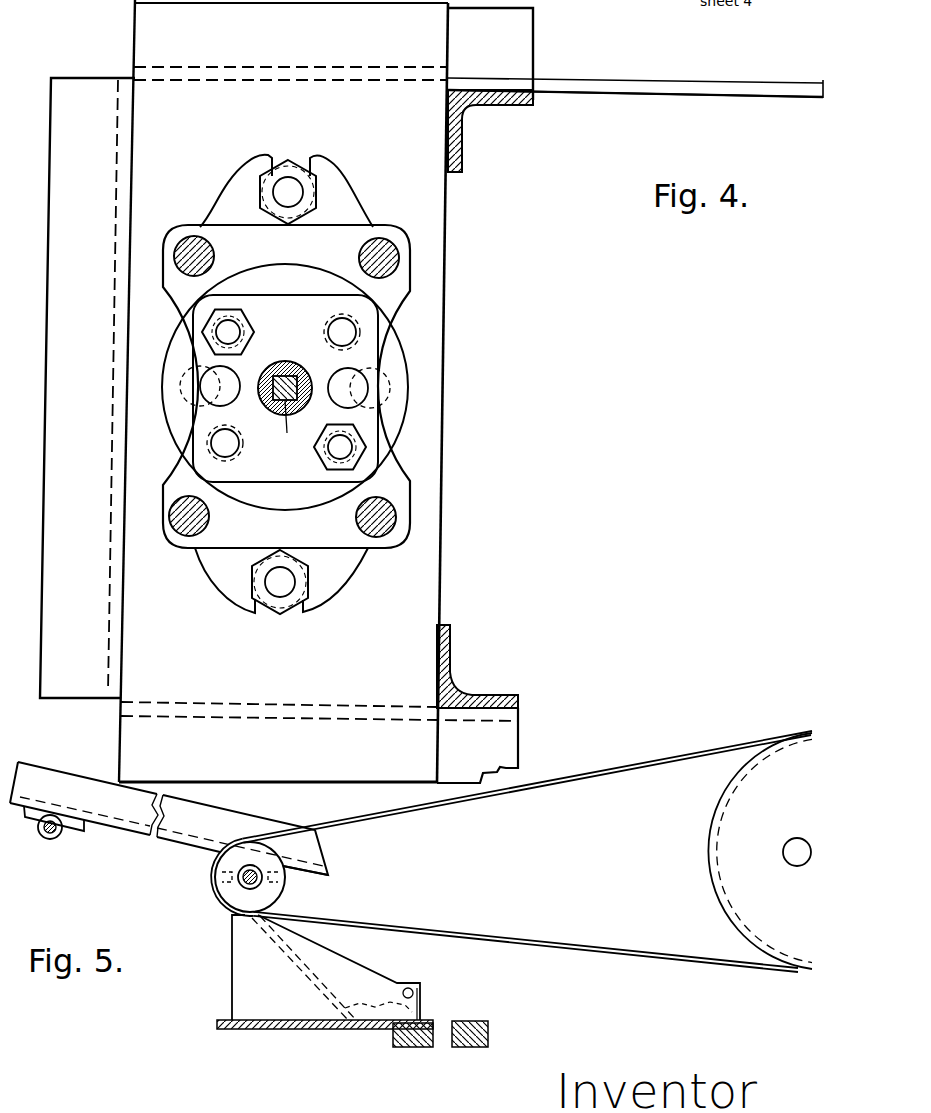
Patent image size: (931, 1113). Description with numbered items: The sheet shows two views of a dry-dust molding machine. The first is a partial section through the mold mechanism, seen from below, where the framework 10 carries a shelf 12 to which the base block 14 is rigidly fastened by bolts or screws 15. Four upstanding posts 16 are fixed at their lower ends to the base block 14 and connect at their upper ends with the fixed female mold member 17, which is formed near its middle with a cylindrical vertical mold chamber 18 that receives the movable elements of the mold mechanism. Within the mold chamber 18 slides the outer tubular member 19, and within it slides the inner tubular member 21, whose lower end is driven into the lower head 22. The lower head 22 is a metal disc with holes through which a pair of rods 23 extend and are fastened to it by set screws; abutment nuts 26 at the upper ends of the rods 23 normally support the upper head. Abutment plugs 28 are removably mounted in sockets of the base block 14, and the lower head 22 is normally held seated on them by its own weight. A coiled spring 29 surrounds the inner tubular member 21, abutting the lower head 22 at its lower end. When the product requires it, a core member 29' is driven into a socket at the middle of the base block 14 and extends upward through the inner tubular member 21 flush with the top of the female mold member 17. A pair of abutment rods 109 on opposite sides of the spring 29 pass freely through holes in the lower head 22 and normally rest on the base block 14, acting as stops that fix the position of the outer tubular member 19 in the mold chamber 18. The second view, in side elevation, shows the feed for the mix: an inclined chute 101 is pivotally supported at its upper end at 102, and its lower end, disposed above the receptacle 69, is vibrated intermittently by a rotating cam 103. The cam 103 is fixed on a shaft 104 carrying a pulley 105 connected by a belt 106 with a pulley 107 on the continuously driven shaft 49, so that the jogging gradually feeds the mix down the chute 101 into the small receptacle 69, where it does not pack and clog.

In FIG. 4, the framework 10 is at (520, 104).
In FIG. 4, the shelf 12 is at (279, 391).
In FIG. 4, the base block 14 is at (345, 236).
In FIG. 4, the bolts or screws 15 is at (299, 190).
In FIG. 4, the upstanding posts 16 is at (194, 240).
In FIG. 4, the outer tubular member 19 is at (285, 362).
In FIG. 4, the inner tubular member 21 is at (268, 408).
In FIG. 4, the lower head 22 is at (403, 348).
In FIG. 4, the rods 23 is at (233, 333).
In FIG. 4, the abutment nuts 26 is at (242, 316).
In FIG. 4, the abutment plug 28 is at (390, 392).
In FIG. 4, the coiled spring 29 is at (339, 327).
In FIG. 4, the core member 29' is at (288, 433).
In FIG. 4, the abutment rods 109 is at (360, 320).
In FIG. 5, the inclined chute 101 is at (220, 820).
In FIG. 5, the pivot support 102 is at (47, 837).
In FIG. 5, the rotating cam 103 is at (273, 887).
In FIG. 5, the shaft 104 is at (245, 881).
In FIG. 5, the pulley 105 is at (228, 886).
In FIG. 5, the belt 106 is at (612, 760).
In FIG. 5, the pulley 107 is at (760, 851).
In FIG. 5, the continuously driven shaft 49 is at (795, 851).
In FIG. 5, the receptacle 69 is at (326, 967).
In FIG. 5, the mold chamber 18 is at (443, 1020).
In FIG. 5, the female mold member 17 is at (484, 1021).